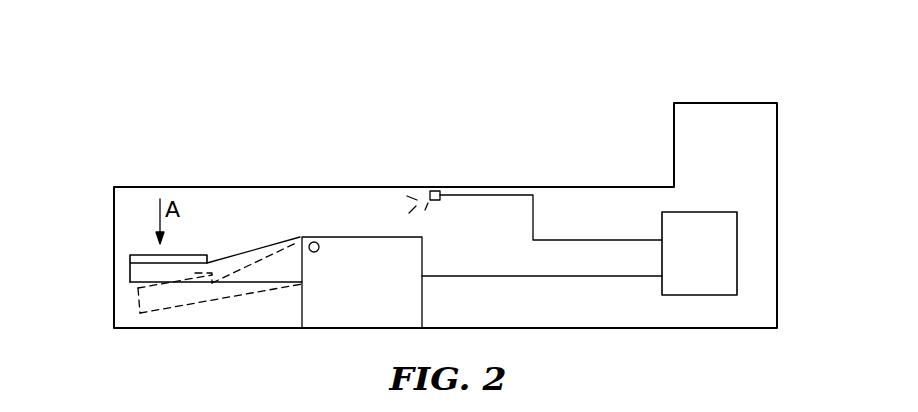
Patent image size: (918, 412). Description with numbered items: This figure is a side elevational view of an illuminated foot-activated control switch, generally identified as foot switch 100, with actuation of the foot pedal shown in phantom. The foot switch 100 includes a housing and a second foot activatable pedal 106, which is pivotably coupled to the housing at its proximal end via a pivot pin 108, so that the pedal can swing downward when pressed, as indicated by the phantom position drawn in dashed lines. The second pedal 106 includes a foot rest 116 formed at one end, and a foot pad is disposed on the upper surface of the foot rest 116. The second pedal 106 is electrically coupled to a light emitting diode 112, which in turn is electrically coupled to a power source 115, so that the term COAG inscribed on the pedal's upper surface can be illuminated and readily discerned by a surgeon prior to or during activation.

The foot switch 100 is at (216, 164).
The second foot activatable pedal 106 is at (245, 258).
The pivot pin 108 is at (319, 250).
The light emitting diode 112 is at (435, 190).
The power source 115 is at (677, 267).
The foot rest 116 is at (130, 259).